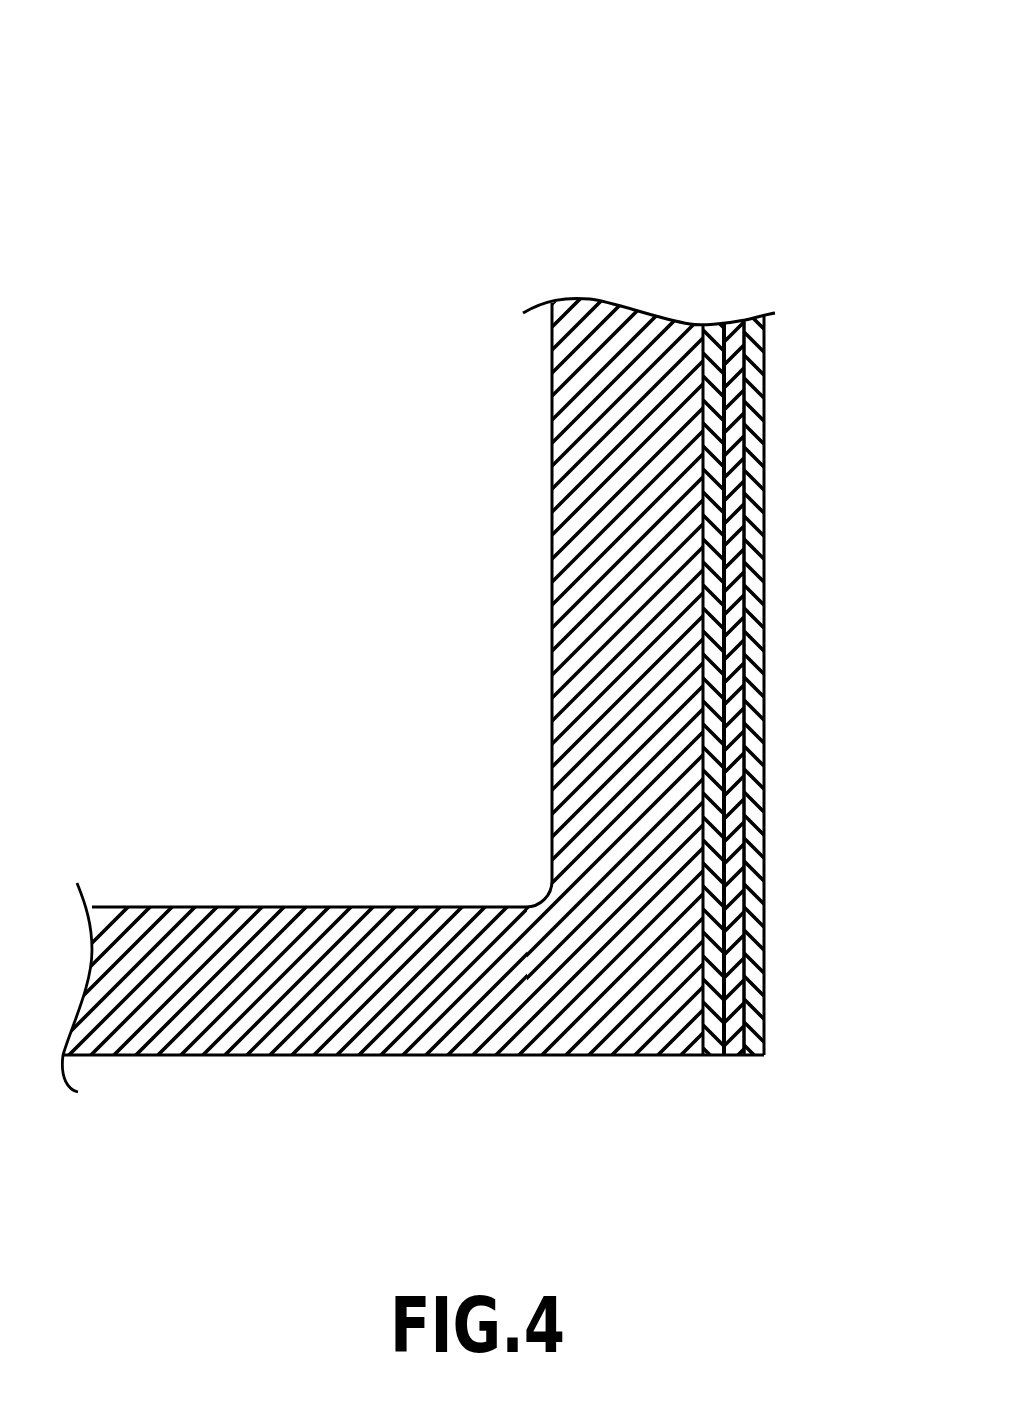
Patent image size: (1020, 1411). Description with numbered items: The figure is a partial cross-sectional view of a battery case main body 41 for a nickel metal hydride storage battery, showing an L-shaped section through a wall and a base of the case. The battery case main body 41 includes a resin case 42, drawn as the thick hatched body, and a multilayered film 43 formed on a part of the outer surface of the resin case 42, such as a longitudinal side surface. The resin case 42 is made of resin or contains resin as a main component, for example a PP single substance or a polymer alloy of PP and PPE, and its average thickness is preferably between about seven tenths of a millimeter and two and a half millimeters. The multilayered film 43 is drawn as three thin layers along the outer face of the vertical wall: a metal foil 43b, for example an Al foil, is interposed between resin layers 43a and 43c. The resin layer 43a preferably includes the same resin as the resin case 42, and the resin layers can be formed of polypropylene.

The battery case main body 41 is at (750, 74).
The resin case 42 is at (579, 296).
The multilayered film 43 is at (852, 143).
The resin layer 43a is at (709, 322).
The metal foil 43b is at (733, 323).
The resin layer 43c is at (754, 320).